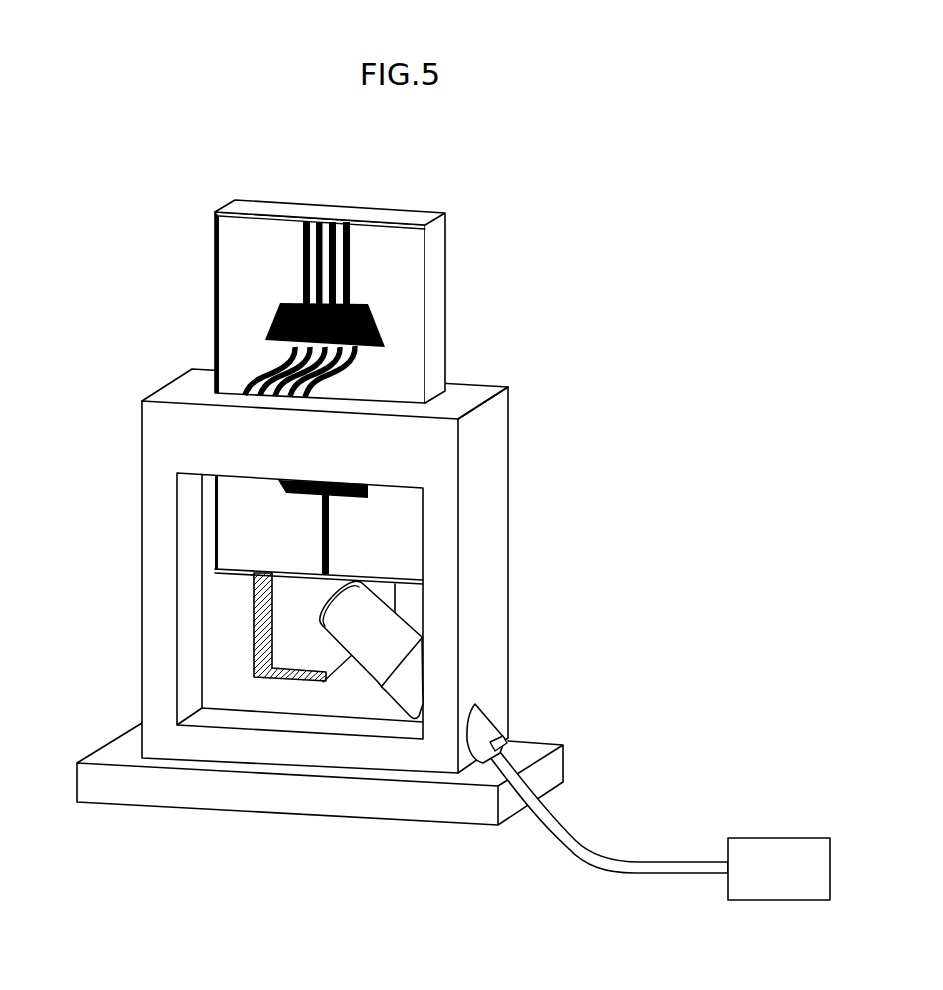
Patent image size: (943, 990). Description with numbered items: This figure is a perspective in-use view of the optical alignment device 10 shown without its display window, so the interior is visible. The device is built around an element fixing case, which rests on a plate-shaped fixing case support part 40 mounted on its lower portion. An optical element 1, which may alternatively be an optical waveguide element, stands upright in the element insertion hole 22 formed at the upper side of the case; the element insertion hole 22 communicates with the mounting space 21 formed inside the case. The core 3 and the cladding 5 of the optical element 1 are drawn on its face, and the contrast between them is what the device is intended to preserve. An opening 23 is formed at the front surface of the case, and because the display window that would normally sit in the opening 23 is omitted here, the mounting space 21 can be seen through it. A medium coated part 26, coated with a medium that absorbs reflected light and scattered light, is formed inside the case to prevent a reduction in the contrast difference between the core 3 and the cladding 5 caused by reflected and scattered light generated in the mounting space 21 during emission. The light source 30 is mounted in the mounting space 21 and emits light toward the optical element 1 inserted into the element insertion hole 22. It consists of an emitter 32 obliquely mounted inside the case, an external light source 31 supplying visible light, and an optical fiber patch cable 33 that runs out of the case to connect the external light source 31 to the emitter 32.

The optical element 1 is at (224, 204).
The core 3 is at (330, 528).
The cladding 5 is at (237, 261).
The optical alignment device 10 is at (580, 326).
The mounting space 21 is at (224, 596).
The element insertion hole 22 is at (228, 393).
The opening 23 is at (184, 498).
The medium coated part 26 is at (255, 662).
The light source 30 is at (575, 535).
The external light source 31 is at (755, 857).
The emitter 32 is at (398, 637).
The optical fiber patch cable 33 is at (568, 843).
The fixing case support part 40 is at (252, 790).